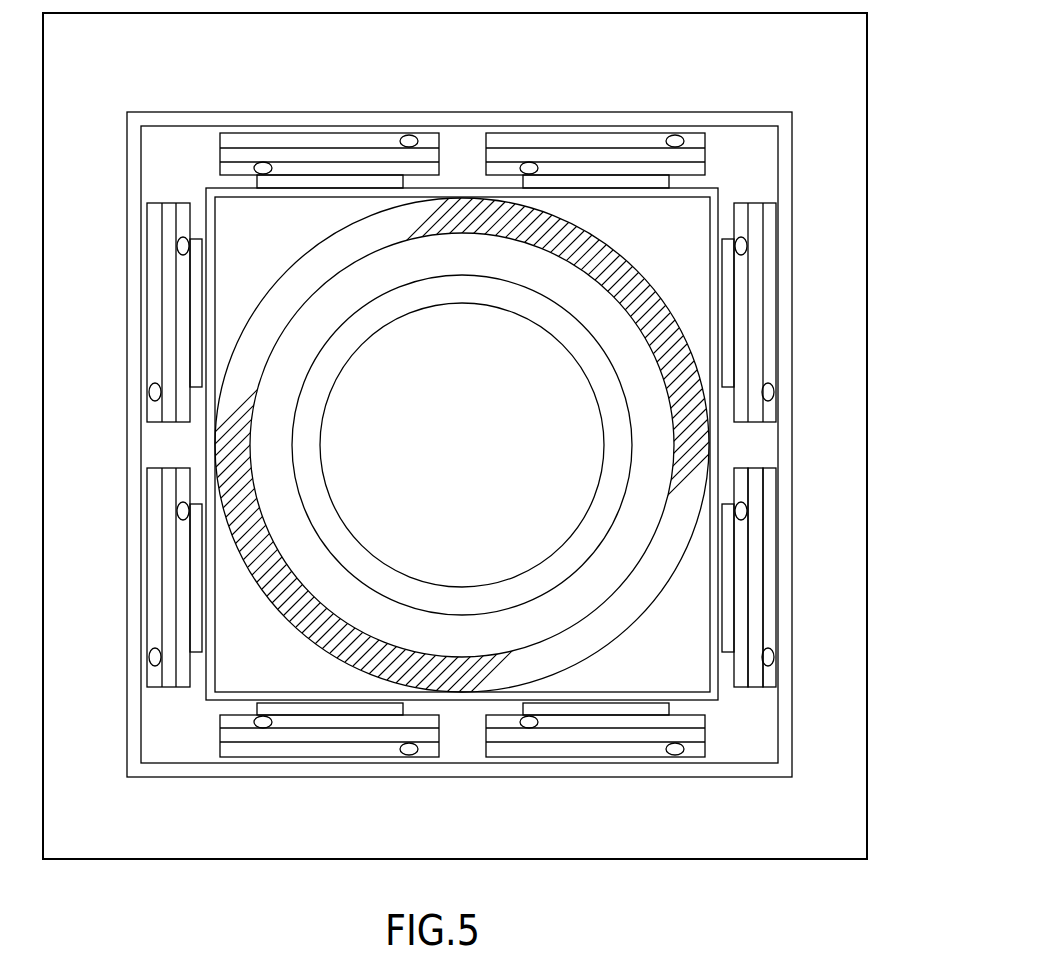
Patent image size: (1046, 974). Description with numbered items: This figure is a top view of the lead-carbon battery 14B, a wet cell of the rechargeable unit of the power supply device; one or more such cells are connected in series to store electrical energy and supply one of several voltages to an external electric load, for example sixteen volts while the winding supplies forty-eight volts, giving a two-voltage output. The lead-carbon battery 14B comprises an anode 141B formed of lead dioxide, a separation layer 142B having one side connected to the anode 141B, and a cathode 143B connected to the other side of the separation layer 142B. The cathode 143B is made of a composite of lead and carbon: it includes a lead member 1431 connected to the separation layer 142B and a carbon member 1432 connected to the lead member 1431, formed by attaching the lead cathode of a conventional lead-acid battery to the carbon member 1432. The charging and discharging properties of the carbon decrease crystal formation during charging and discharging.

The lead-carbon battery 14B is at (841, 647).
The anode 141B is at (770, 641).
The separation layer 142B is at (758, 680).
The cathode 143B is at (824, 647).
The lead member 1431 is at (739, 679).
The carbon member 1432 is at (725, 650).